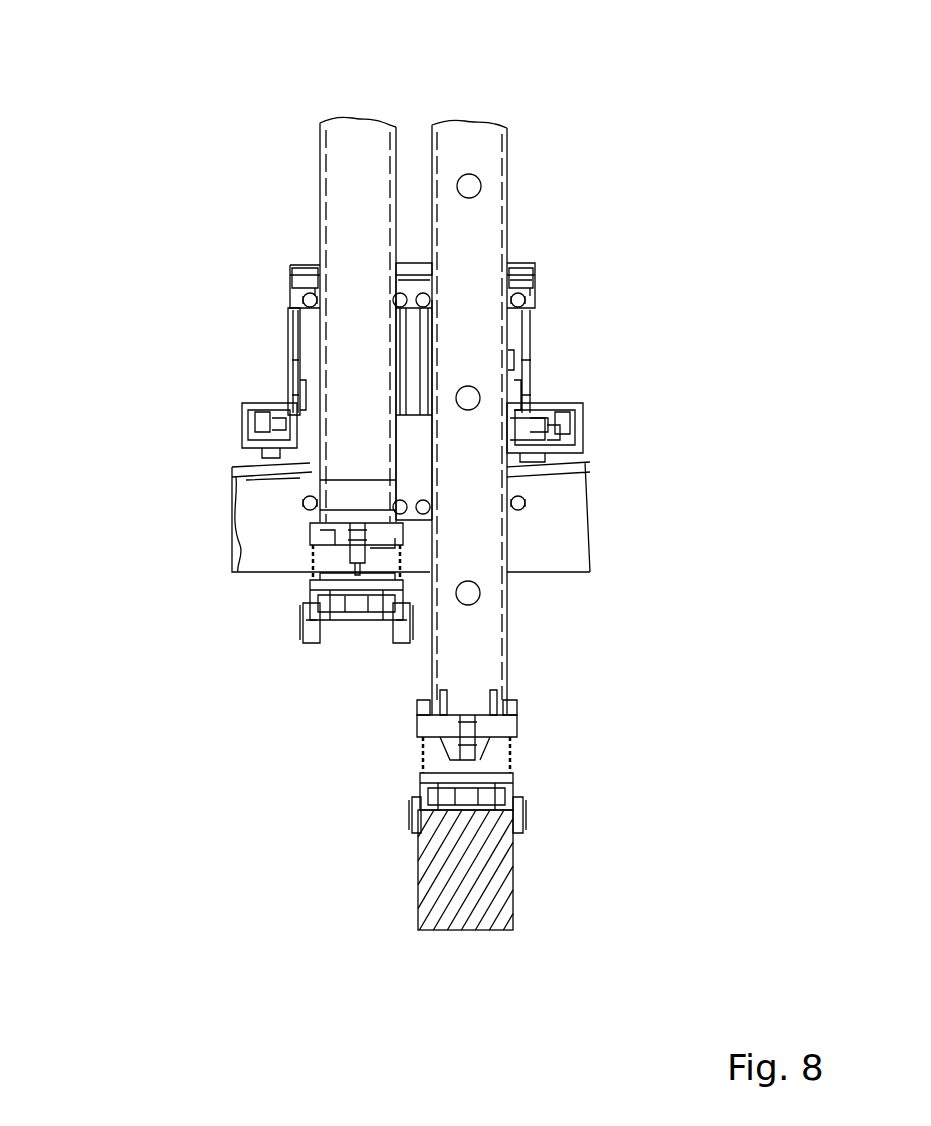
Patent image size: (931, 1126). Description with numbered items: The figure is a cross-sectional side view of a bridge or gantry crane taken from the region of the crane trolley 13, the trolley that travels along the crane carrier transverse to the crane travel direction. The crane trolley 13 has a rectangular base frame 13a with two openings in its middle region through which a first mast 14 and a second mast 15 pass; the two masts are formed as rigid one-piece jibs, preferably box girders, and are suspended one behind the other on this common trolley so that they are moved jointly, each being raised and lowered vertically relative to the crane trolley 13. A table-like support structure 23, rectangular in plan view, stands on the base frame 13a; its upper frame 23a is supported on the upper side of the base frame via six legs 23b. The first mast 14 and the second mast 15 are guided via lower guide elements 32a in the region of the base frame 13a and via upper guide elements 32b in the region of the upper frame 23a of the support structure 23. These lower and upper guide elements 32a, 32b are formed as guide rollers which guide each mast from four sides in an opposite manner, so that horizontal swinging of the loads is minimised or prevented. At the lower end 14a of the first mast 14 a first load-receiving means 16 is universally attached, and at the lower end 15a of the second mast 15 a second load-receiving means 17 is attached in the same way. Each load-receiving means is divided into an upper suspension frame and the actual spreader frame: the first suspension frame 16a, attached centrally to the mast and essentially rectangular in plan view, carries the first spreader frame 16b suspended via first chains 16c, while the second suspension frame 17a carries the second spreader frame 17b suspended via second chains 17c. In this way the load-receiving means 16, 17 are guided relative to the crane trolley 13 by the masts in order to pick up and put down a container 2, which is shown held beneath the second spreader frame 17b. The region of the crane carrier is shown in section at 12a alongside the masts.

The container 2 is at (470, 868).
The support rail 12a is at (543, 545).
The crane trolley 13 is at (290, 262).
The base frame 13a is at (312, 457).
The first mast 14 is at (366, 160).
The lower end of first mast 14a is at (358, 480).
The second mast 15 is at (470, 160).
The lower end of second mast 15a is at (468, 678).
The first load-receiving means 16 is at (287, 605).
The first suspension frame 16a is at (328, 540).
The first spreader frame 16b is at (313, 622).
The first chains 16c is at (345, 567).
The second load-receiving means 17 is at (539, 800).
The second suspension frame 17a is at (512, 730).
The second spreader frame 17b is at (410, 800).
The second chains 17c is at (512, 750).
The support structure 23 is at (536, 257).
The upper frame 23a is at (305, 272).
The legs 23b is at (298, 370).
The lower guide elements 32a is at (520, 500).
The upper guide elements 32b is at (520, 300).